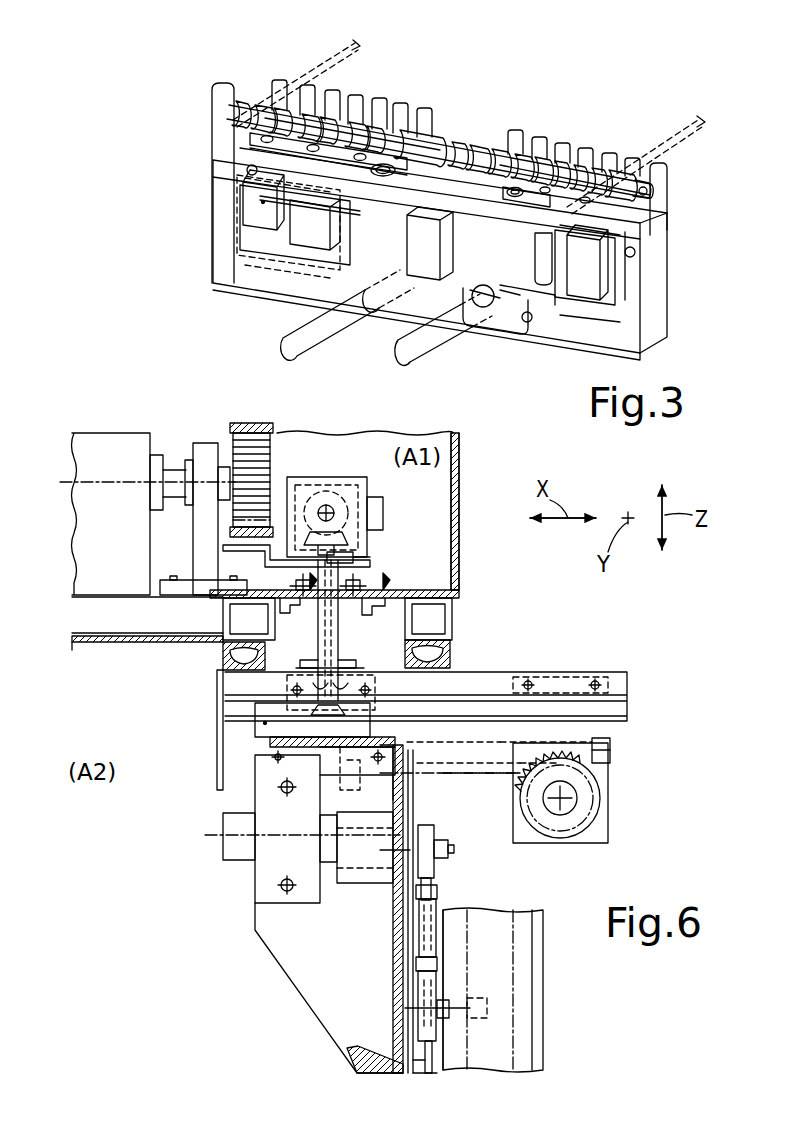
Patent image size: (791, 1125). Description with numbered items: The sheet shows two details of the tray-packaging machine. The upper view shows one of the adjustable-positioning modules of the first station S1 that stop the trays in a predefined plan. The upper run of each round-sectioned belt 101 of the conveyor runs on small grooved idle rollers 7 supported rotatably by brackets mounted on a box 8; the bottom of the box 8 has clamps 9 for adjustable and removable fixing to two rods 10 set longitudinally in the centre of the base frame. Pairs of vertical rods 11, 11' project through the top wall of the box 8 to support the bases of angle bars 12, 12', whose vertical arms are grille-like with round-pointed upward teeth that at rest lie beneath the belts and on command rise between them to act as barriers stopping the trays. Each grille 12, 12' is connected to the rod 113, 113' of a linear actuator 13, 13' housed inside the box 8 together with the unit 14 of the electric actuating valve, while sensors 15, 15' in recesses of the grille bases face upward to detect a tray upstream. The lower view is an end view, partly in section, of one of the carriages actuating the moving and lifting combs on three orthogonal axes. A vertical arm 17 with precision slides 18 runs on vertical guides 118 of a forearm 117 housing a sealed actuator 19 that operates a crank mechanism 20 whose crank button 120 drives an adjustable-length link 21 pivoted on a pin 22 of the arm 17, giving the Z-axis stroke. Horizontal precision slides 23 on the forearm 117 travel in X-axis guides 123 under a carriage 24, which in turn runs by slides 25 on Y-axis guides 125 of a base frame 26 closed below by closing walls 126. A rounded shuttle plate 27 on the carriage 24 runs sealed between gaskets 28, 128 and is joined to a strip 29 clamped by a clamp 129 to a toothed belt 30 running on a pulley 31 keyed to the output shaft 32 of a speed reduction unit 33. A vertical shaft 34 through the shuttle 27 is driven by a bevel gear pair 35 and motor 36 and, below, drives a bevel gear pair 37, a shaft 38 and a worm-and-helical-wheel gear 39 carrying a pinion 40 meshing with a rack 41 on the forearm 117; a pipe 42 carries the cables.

In FIG. 3, the grooved idle rollers 7 is at (432, 150).
In FIG. 3, the box 8 is at (207, 237).
In FIG. 3, the clamps 9 is at (498, 318).
In FIG. 3, the rods 10 is at (405, 355).
In FIG. 3, the vertical rod 11 is at (245, 221).
In FIG. 3, the vertical rod 11' is at (640, 274).
In FIG. 3, the angle bar grille 12 is at (352, 91).
In FIG. 3, the angle bar grille 12' is at (583, 143).
In FIG. 3, the linear actuator 13 is at (256, 260).
In FIG. 3, the linear actuator 13' is at (574, 314).
In FIG. 3, the electric actuating valve unit 14 is at (435, 278).
In FIG. 3, the sensor 15 is at (352, 104).
In FIG. 3, the sensor 15' is at (546, 129).
In FIG. 3, the belts 101 is at (342, 47).
In FIG. 3, the actuator rod 113 is at (226, 201).
In FIG. 3, the actuator rod 113' is at (645, 273).
In FIG. 3, the first station S1 is at (640, 94).
In FIG. 6, the vertical arm 17 is at (536, 1012).
In FIG. 6, the precision slides 18 is at (443, 975).
In FIG. 6, the sealed actuator 19 is at (275, 869).
In FIG. 6, the crank mechanism 20 is at (362, 880).
In FIG. 6, the adjustable-length link 21 is at (440, 903).
In FIG. 6, the pin 22 is at (447, 1020).
In FIG. 6, the horizontal precision slides 23 is at (265, 723).
In FIG. 6, the carriage 24 is at (625, 670).
In FIG. 6, the precision slides 25 is at (223, 658).
In FIG. 6, the base frame 26 is at (449, 589).
In FIG. 6, the plate (shuttle) 27 is at (340, 650).
In FIG. 6, the flexible gasket 28 is at (292, 586).
In FIG. 6, the strip 29 is at (355, 557).
In FIG. 6, the endless toothed belt 30 is at (251, 454).
In FIG. 6, the pulley 31 is at (183, 470).
In FIG. 6, the slow output shaft 32 is at (157, 470).
In FIG. 6, the speed reduction unit 33 is at (90, 431).
In FIG. 6, the vertical shaft 34 is at (318, 709).
In FIG. 6, the bevel gear pair 35 is at (325, 476).
In FIG. 6, the electric motor 36 is at (377, 490).
In FIG. 6, the bevel gear pair 37 is at (352, 777).
In FIG. 6, the shaft 38 is at (462, 765).
In FIG. 6, the worm-and-helical-wheel gear 39 is at (600, 781).
In FIG. 6, the pinion 40 is at (583, 818).
In FIG. 6, the rack 41 is at (477, 778).
In FIG. 6, the pipe 42 is at (340, 557).
In FIG. 6, the forearm 117 is at (318, 975).
In FIG. 6, the vertical guides 118 is at (420, 1073).
In FIG. 6, the crank button 120 is at (452, 852).
In FIG. 6, the straight guides 123 is at (620, 707).
In FIG. 6, the straight horizontal guides 125 is at (225, 626).
In FIG. 6, the closing walls 126 is at (84, 643).
In FIG. 6, the flexible gasket 128 is at (366, 586).
In FIG. 6, the clamp 129 is at (230, 543).